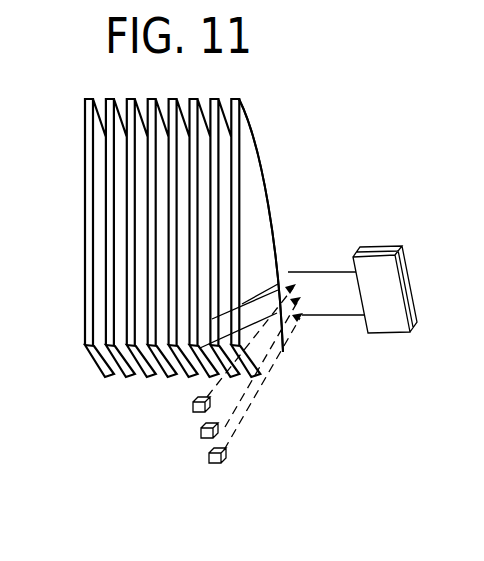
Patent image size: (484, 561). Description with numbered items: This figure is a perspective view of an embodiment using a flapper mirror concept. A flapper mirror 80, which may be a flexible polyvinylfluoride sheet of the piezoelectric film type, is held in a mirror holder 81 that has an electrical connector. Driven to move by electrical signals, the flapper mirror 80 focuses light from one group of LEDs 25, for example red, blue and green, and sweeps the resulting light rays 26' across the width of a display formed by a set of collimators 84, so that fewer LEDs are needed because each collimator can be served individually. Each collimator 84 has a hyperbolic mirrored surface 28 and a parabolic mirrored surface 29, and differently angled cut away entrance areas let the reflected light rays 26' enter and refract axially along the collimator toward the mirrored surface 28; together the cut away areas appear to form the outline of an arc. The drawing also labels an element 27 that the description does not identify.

The LEDs 25 is at (209, 458).
The light rays 26' is at (255, 367).
The fins / plates 27 is at (93, 217).
The hyperbolic mirrored surface 28 is at (98, 363).
The parabolic mirrored surface 29 is at (268, 202).
The flapper mirror 80 is at (300, 262).
The mirror holder 81 is at (400, 245).
The collimators 84 is at (260, 137).